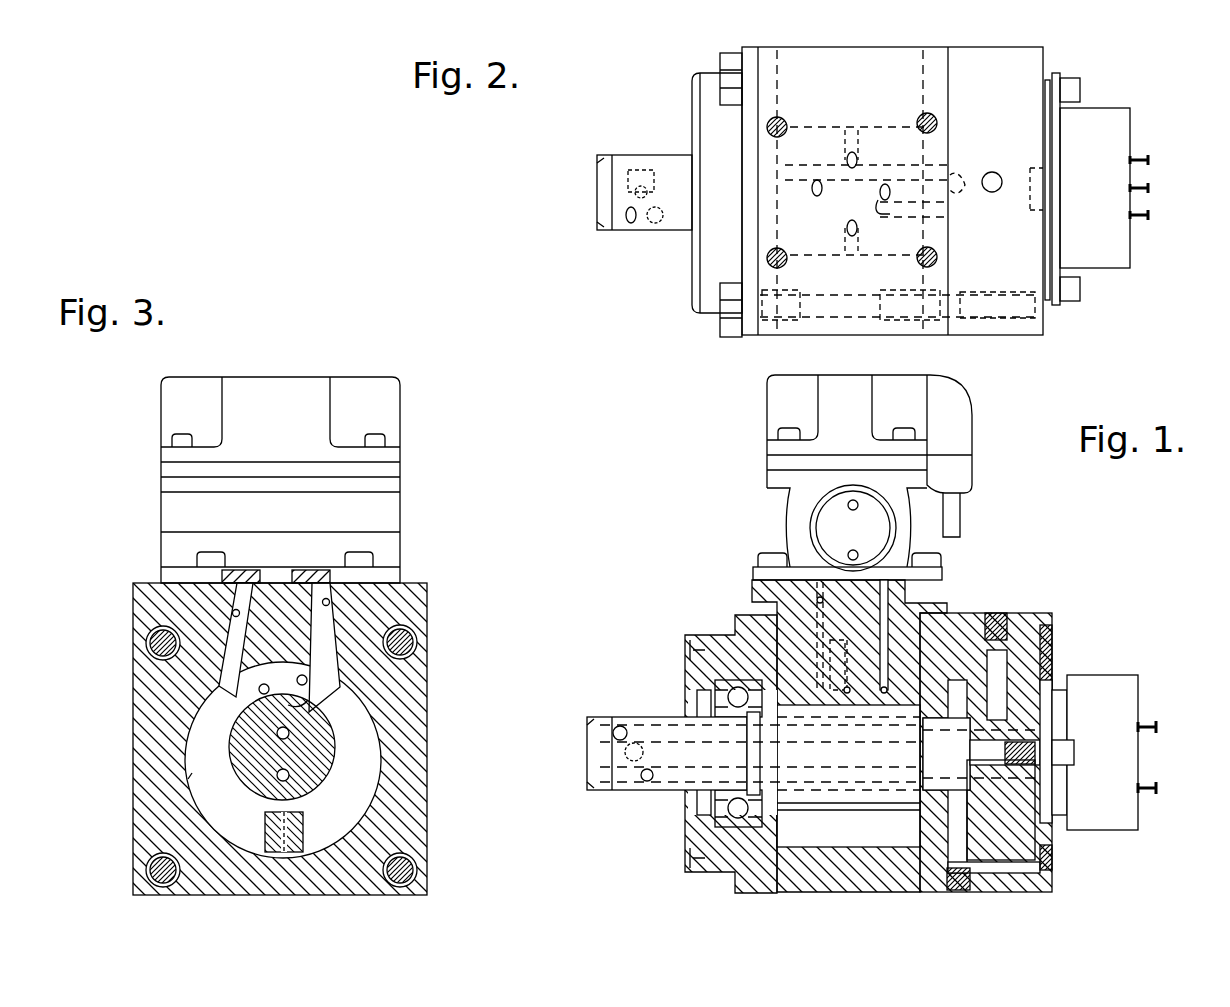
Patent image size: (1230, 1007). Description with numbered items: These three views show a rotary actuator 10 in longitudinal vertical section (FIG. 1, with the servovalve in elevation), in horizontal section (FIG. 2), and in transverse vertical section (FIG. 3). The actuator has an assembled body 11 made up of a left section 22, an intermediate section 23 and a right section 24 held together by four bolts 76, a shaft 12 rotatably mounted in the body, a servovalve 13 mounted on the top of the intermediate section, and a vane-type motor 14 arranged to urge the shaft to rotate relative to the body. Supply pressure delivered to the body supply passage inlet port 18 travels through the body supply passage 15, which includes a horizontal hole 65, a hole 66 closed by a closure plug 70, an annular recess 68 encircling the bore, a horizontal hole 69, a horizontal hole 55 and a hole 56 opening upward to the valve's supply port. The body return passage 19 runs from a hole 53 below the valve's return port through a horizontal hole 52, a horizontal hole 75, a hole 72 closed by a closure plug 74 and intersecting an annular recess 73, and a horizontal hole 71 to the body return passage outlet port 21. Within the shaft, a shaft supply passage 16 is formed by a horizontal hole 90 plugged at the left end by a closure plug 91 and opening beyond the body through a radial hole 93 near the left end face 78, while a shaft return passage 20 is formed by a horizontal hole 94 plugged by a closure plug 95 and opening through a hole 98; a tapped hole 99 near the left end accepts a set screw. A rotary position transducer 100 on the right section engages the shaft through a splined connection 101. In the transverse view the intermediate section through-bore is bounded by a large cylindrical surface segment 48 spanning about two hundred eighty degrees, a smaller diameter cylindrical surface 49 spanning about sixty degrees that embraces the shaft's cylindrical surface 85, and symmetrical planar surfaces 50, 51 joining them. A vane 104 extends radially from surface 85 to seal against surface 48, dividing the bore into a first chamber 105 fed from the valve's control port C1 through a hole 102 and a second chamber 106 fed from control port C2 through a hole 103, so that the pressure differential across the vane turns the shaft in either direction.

In FIG. 1, the rotary actuator 10 is at (1048, 508).
In FIG. 2, the rotary actuator 10 is at (1150, 78).
In FIG. 3, the rotary actuator 10 is at (470, 478).
In FIG. 1, the assembled body 11 is at (958, 600).
In FIG. 2, the assembled body 11 is at (1010, 338).
In FIG. 3, the assembled body 11 is at (145, 583).
In FIG. 1, the shaft 12 is at (586, 746).
In FIG. 2, the shaft 12 is at (595, 185).
In FIG. 1, the servovalve 13 is at (765, 408).
In FIG. 3, the servovalve 13 is at (312, 377).
In FIG. 1, the vane-type motor 14 is at (858, 850).
In FIG. 3, the vane-type motor 14 is at (308, 832).
In FIG. 1, the body supply passage 15 is at (949, 633).
In FIG. 1, the shaft supply passage 16 is at (846, 740).
In FIG. 1, the body supply passage inlet port 18 is at (1052, 882).
In FIG. 1, the body return passage 19 is at (1000, 664).
In FIG. 1, the shaft return passage 20 is at (912, 762).
In FIG. 1, the body return passage outlet port 21 is at (1052, 650).
In FIG. 1, the left section 22 is at (748, 893).
In FIG. 2, the left section 22 is at (700, 72).
In FIG. 1, the intermediate section 23 is at (806, 893).
In FIG. 2, the intermediate section 23 is at (765, 340).
In FIG. 3, the intermediate section 23 is at (133, 740).
In FIG. 1, the right section 24 is at (1040, 893).
In FIG. 2, the right section 24 is at (1047, 55).
In FIG. 3, the cylindrical surface segment 48 is at (188, 778).
In FIG. 3, the smaller diameter cylindrical surface 49 is at (312, 712).
In FIG. 3, the planar surface 50 is at (244, 708).
In FIG. 3, the planar surface 51 is at (335, 698).
In FIG. 1, the horizontal hole 52 is at (847, 686).
In FIG. 3, the horizontal hole 52 is at (263, 684).
In FIG. 1, the hole 53 is at (825, 600).
In FIG. 2, the hole 53 is at (816, 197).
In FIG. 1, the horizontal hole 55 is at (888, 688).
In FIG. 3, the horizontal hole 55 is at (302, 675).
In FIG. 1, the hole 56 is at (878, 622).
In FIG. 2, the hole 56 is at (879, 192).
In FIG. 1, the horizontal hole 65 is at (1052, 860).
In FIG. 1, the hole 66 is at (920, 710).
In FIG. 1, the annular recess 68 is at (920, 796).
In FIG. 1, the horizontal hole 69 is at (933, 661).
In FIG. 1, the closure plug 70 is at (955, 892).
In FIG. 1, the horizontal hole 71 is at (1022, 622).
In FIG. 1, the hole 72 is at (995, 650).
In FIG. 1, the annular recess 73 is at (1001, 810).
In FIG. 1, the closure plug 74 is at (997, 613).
In FIG. 2, the closure plug 74 is at (996, 170).
In FIG. 1, the horizontal hole 75 is at (963, 673).
In FIG. 2, the bolts 76 is at (725, 80).
In FIG. 3, the bolts 76 is at (146, 643).
In FIG. 1, the left end face 78 is at (597, 778).
In FIG. 2, the left end face 78 is at (598, 208).
In FIG. 3, the cylindrical surface 85 is at (252, 778).
In FIG. 3, the horizontal hole 90 is at (277, 735).
In FIG. 1, the closure plug 91 is at (600, 722).
In FIG. 1, the radial hole 93 is at (620, 726).
In FIG. 2, the radial hole 93 is at (630, 222).
In FIG. 3, the horizontal hole 94 is at (289, 772).
In FIG. 1, the closure plug 95 is at (602, 795).
In FIG. 1, the hole 98 is at (647, 781).
In FIG. 2, the hole 98 is at (655, 223).
In FIG. 1, the tapped hole 99 is at (644, 752).
In FIG. 2, the tapped hole 99 is at (642, 168).
In FIG. 1, the rotary position transducer 100 is at (1142, 690).
In FIG. 2, the rotary position transducer 100 is at (1140, 242).
In FIG. 1, the splined connection 101 is at (1020, 765).
In FIG. 2, the hole 102 is at (846, 160).
In FIG. 3, the hole 102 is at (232, 612).
In FIG. 2, the hole 103 is at (858, 230).
In FIG. 3, the hole 103 is at (330, 603).
In FIG. 3, the vane 104 is at (265, 834).
In FIG. 3, the first chamber 105 is at (222, 768).
In FIG. 3, the second chamber 106 is at (372, 768).
In FIG. 3, the control port C1 is at (243, 580).
In FIG. 3, the control port C2 is at (318, 580).